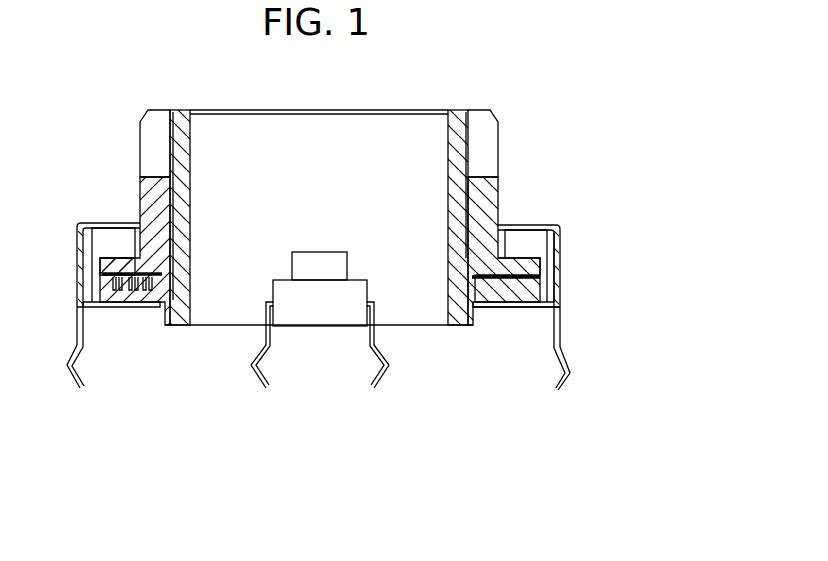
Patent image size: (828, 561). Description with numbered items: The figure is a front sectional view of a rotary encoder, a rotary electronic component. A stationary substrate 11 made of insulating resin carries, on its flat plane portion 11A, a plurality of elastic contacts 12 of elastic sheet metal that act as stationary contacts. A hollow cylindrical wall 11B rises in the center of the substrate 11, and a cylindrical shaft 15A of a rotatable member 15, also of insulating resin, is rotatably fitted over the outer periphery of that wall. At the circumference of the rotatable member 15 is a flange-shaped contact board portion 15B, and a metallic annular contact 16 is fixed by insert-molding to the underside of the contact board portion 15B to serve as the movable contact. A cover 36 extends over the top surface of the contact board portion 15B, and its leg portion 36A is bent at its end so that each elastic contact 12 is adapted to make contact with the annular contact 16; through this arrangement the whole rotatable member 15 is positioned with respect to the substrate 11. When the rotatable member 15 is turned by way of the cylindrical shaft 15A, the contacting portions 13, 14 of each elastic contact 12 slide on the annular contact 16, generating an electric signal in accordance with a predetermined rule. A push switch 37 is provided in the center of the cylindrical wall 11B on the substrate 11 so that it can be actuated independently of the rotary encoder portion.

The stationary substrate 11 is at (290, 490).
The flat plane portion 11A is at (160, 300).
The hollow cylindrical wall 11B is at (186, 207).
The elastic contact 12 is at (177, 445).
The contacting portion 13 is at (115, 292).
The contacting portion 14 is at (135, 290).
The rotatable member 15 is at (527, 490).
The cylindrical shaft 15A is at (476, 230).
The contact board portion 15B is at (520, 255).
The metallic annular contact 16 is at (497, 275).
The cover 36 is at (561, 280).
The leg portion 36A is at (512, 235).
The push switch 37 is at (310, 308).